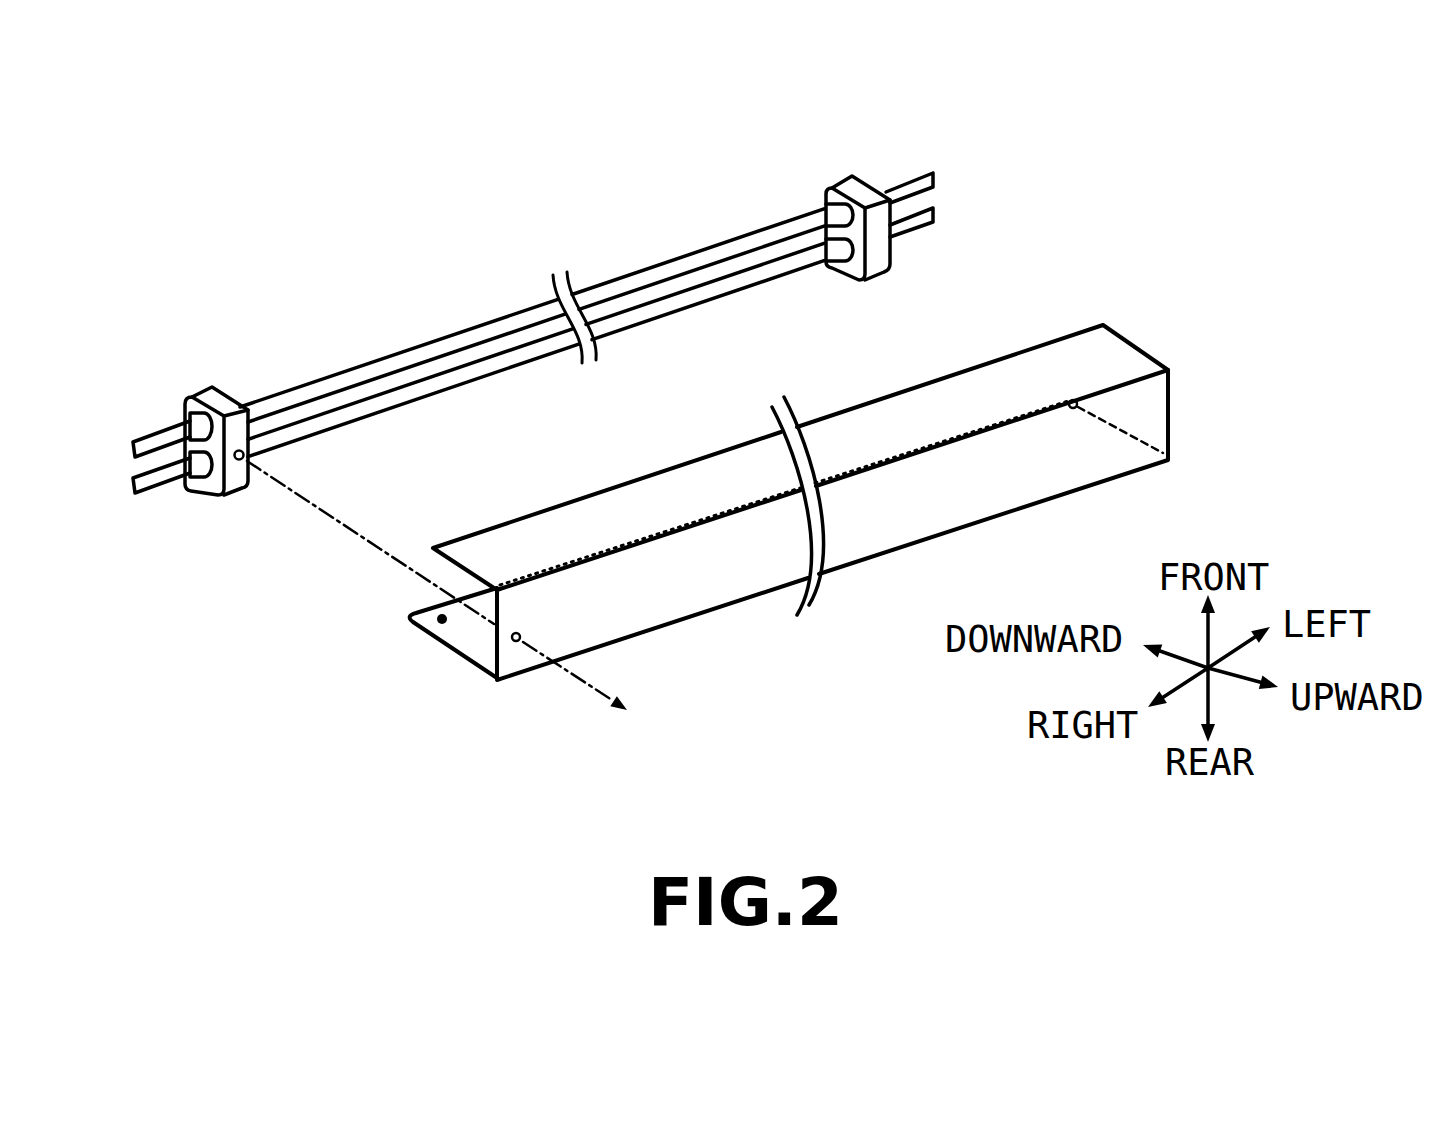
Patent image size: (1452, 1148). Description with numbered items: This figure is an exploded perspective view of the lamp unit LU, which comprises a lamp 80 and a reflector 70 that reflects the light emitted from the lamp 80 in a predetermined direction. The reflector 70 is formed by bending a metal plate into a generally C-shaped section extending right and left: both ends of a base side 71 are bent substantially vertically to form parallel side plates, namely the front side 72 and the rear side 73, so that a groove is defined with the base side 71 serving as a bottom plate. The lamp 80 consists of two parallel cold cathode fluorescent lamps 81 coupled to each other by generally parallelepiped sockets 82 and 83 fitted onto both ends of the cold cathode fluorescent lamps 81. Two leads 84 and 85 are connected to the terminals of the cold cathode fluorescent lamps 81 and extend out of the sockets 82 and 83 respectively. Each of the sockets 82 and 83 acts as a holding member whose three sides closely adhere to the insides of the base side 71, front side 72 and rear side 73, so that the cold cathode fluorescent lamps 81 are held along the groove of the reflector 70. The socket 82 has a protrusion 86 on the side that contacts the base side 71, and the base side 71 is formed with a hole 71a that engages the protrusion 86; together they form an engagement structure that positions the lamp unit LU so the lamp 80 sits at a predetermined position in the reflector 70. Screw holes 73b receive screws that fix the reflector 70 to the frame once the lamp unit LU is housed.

The lamp unit LU is at (1373, 328).
The reflector 70 is at (697, 614).
The base side 71 is at (1170, 425).
The hole 71a is at (517, 642).
The front side 72 is at (1140, 349).
The rear side 73 is at (450, 648).
The screw hole 73b is at (436, 616).
The lamp 80 is at (385, 357).
The cold cathode fluorescent lamps 81 is at (667, 303).
The socket 82 is at (220, 396).
The socket 83 is at (857, 182).
The lead 84 is at (176, 484).
The lead 85 is at (922, 218).
The protrusion 86 is at (237, 492).